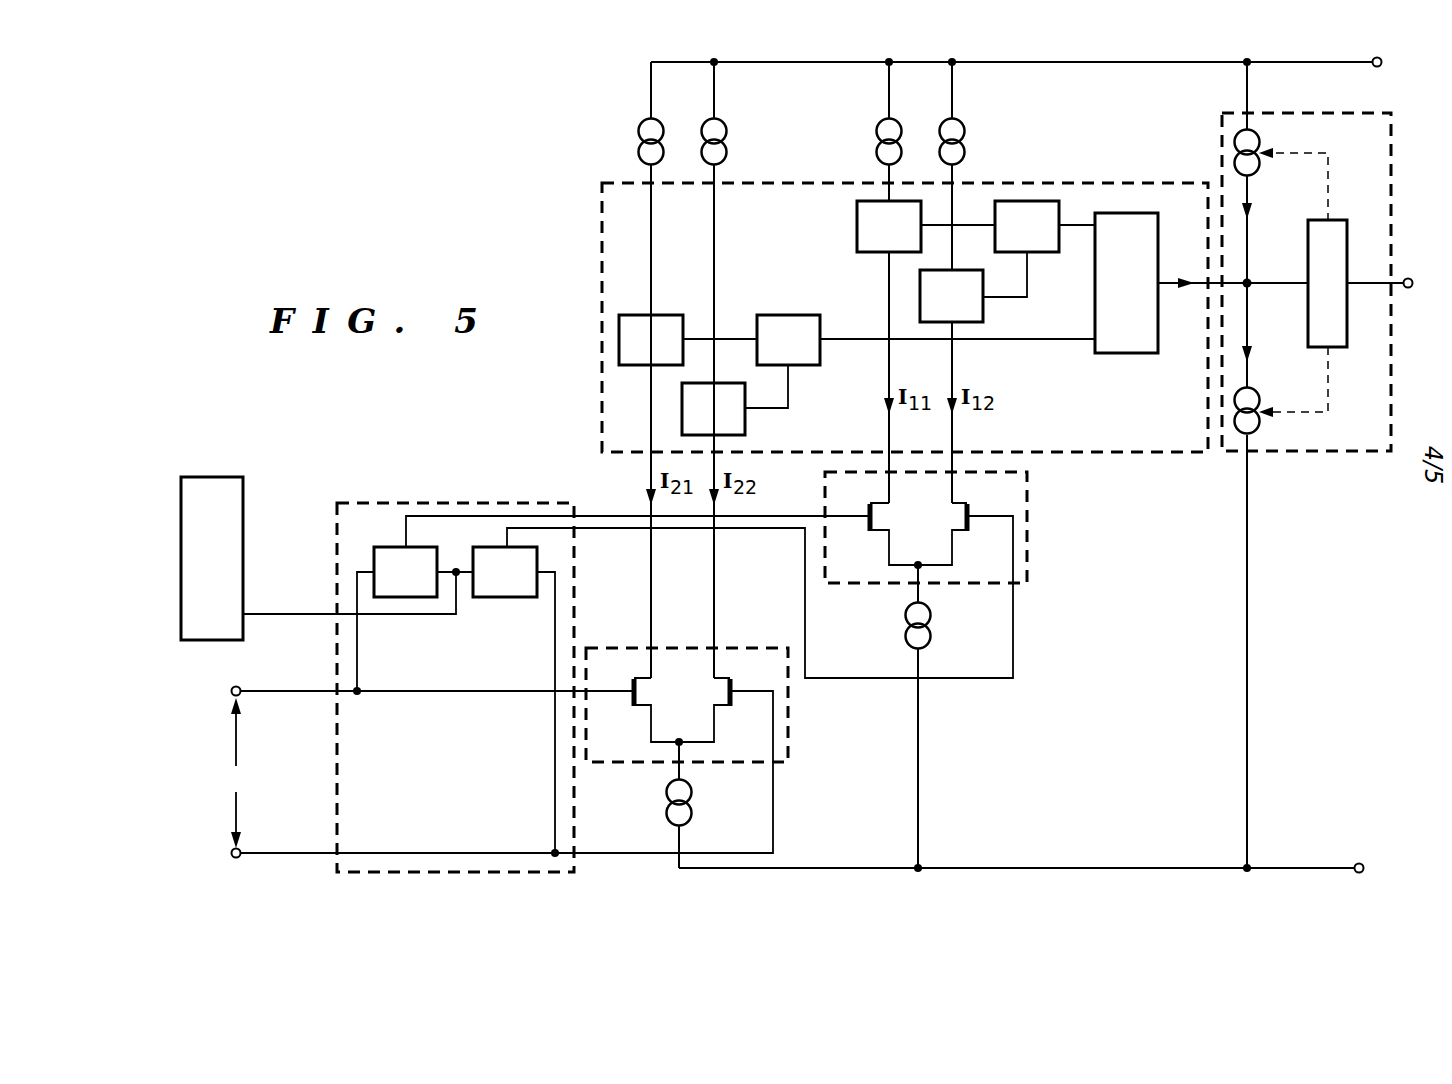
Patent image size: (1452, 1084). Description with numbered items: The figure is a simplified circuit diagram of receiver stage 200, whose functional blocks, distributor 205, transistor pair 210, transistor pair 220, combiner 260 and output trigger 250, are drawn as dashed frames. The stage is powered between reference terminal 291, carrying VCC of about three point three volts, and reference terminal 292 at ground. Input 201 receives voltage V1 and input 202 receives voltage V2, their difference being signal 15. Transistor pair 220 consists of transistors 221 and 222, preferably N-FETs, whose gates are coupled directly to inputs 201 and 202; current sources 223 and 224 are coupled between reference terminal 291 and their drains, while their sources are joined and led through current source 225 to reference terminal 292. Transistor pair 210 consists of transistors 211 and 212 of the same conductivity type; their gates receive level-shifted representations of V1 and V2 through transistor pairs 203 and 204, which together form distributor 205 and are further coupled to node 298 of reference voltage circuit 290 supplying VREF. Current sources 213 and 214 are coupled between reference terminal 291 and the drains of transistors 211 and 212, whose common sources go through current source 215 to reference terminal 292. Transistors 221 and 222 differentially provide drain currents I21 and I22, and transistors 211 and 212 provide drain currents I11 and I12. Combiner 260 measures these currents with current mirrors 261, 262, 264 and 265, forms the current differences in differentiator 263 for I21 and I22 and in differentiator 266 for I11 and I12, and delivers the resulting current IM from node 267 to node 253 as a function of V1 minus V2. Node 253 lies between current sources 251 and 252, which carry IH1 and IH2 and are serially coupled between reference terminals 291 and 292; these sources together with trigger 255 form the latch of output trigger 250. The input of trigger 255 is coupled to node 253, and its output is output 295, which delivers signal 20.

The receiver stage 200 is at (372, 273).
The signal 15 is at (239, 773).
The signal 20 is at (1368, 283).
The input 201 is at (231, 691).
The input 202 is at (231, 853).
The transistor pair 203 is at (427, 587).
The transistor pair 204 is at (526, 587).
The distributor 205 is at (470, 503).
The transistor pair 210 is at (1027, 517).
The transistor 211 is at (866, 535).
The transistor 212 is at (971, 535).
The current source 213 is at (884, 130).
The current source 214 is at (965, 130).
The current source 215 is at (908, 613).
The transistor pair 220 is at (607, 648).
The transistor 221 is at (628, 713).
The transistor 222 is at (734, 713).
The current source 223 is at (646, 130).
The current source 224 is at (727, 130).
The current source 225 is at (667, 789).
The output trigger 250 is at (1318, 452).
The current source 251 is at (1262, 138).
The current source 252 is at (1260, 394).
The node 253 is at (1248, 283).
The trigger 255 is at (1328, 347).
The combiner 260 is at (602, 280).
The current mirror 261 is at (672, 355).
The current mirror 262 is at (734, 423).
The differentiator 263 is at (809, 355).
The current mirror 264 is at (910, 241).
The current mirror 265 is at (973, 311).
The differentiator 266 is at (1048, 241).
The node 267 is at (1148, 298).
The reference voltage circuit 290 is at (214, 477).
The reference terminal 291 is at (1350, 62).
The reference terminal 292 is at (1318, 864).
The output 295 is at (1410, 286).
The node 298 is at (243, 614).